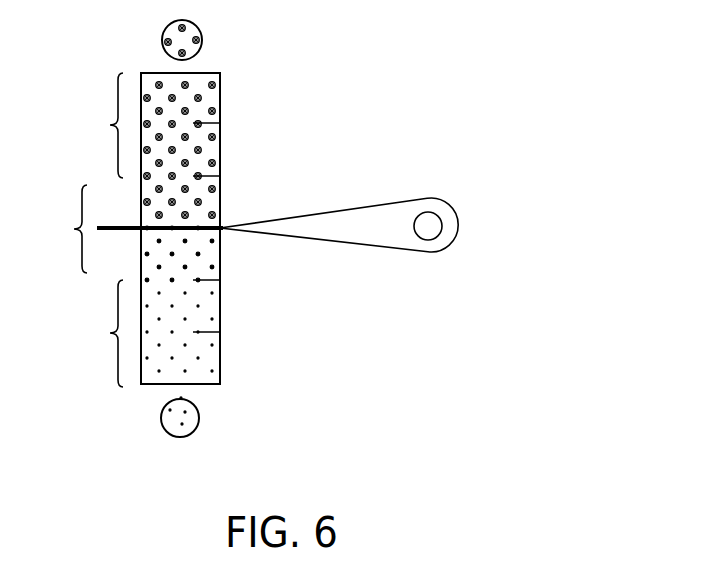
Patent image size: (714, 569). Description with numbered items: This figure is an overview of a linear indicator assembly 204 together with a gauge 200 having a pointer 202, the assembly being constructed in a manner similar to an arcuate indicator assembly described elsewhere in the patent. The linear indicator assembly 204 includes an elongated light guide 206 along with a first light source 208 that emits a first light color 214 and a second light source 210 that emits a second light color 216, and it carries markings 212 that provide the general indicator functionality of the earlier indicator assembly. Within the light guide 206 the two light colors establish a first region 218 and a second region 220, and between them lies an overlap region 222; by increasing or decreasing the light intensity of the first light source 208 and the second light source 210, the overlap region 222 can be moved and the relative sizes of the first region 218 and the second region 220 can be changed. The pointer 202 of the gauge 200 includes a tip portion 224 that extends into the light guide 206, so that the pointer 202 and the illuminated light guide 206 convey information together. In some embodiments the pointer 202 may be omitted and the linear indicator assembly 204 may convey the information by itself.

The gauge 200 is at (362, 248).
The pointer 202 is at (317, 238).
The linear indicator assembly 204 is at (540, 138).
The light guide 206 is at (221, 200).
The first light source 208 is at (161, 418).
The second light source 210 is at (162, 40).
The markings 212 is at (220, 176).
The first light color 214 is at (186, 416).
The second light color 216 is at (196, 40).
The first region 218 is at (94, 333).
The second region 220 is at (94, 125).
The overlap region 222 is at (57, 229).
The tip portion 224 is at (195, 230).